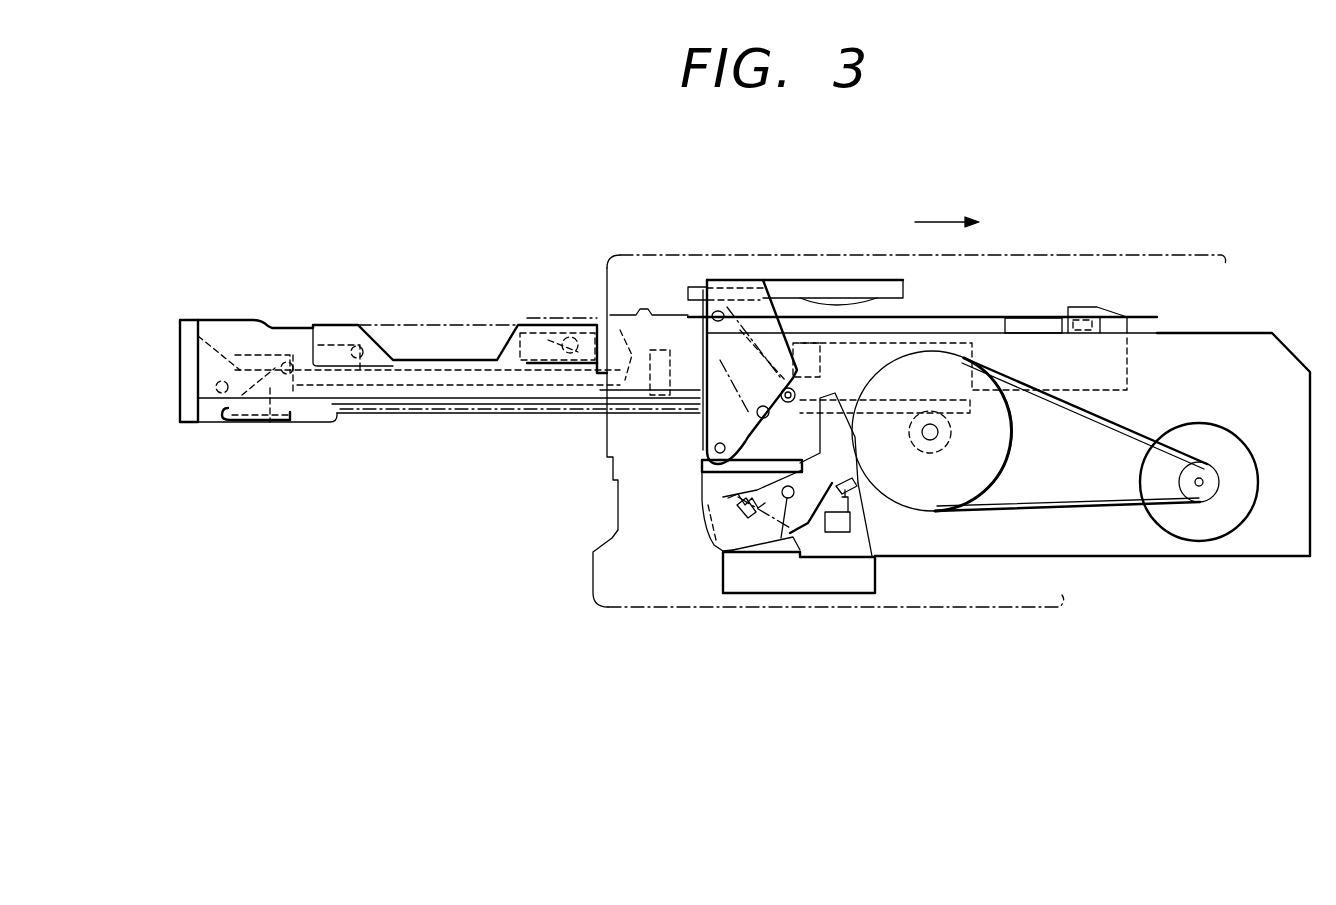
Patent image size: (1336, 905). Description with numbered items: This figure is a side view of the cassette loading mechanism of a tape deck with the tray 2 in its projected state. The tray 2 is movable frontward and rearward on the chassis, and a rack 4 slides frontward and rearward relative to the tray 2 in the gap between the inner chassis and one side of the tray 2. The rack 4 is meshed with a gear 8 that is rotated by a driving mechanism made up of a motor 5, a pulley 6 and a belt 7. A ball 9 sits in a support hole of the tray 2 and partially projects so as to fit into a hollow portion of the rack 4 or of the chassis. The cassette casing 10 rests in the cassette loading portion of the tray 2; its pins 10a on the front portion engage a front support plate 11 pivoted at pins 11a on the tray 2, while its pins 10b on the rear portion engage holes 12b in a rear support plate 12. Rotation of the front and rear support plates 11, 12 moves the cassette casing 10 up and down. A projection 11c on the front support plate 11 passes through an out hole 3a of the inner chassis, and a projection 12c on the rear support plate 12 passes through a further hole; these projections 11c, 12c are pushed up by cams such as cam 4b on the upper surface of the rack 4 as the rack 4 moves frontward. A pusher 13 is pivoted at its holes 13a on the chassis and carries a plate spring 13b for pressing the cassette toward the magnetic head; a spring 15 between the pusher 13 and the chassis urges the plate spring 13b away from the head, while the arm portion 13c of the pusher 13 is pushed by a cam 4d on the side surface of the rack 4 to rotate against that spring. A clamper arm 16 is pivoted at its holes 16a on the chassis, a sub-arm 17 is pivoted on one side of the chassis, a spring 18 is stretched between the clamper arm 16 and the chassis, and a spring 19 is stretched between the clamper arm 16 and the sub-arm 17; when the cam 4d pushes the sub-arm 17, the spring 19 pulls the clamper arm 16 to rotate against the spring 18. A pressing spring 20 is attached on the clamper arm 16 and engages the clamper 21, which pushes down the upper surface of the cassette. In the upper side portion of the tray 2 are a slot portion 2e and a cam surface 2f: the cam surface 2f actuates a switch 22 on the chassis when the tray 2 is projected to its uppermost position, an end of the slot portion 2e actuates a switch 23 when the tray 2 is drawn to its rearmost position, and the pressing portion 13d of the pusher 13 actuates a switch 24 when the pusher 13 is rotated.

The tray 2 is at (230, 328).
The slot portion 2e is at (1107, 310).
The cam surface 2f is at (932, 320).
The out hole 3a is at (270, 430).
The rack 4 is at (424, 411).
The cam 4b is at (178, 313).
The cam 4d is at (226, 422).
The motor 5 is at (1235, 460).
The pulley 6 is at (964, 480).
The belt 7 is at (1108, 425).
The gear 8 is at (950, 438).
The ball 9 is at (821, 300).
The cassette casing 10 is at (422, 383).
The pins 10a is at (369, 320).
The pins 10b is at (565, 320).
The front support plate 11 is at (262, 355).
The pins 11a is at (216, 388).
The projection 11c is at (294, 345).
The rear support plate 12 is at (620, 330).
The holes 12b is at (528, 318).
The projection 12c is at (655, 350).
The pusher 13 is at (806, 507).
The holes 13a is at (784, 540).
The plate spring 13b is at (700, 494).
The arm portion 13c is at (858, 438).
The pressing portion 13d is at (858, 515).
The spring 15 is at (746, 510).
The clamper arm 16 is at (725, 290).
The holes 16a is at (717, 452).
The sub-arm 17 is at (712, 432).
The spring 18 is at (712, 366).
The spring 19 is at (750, 304).
The pressing spring 20 is at (767, 300).
The clamper 21 is at (860, 292).
The switch 22 is at (1157, 318).
The switch 23 is at (1037, 323).
The switch 24 is at (838, 532).